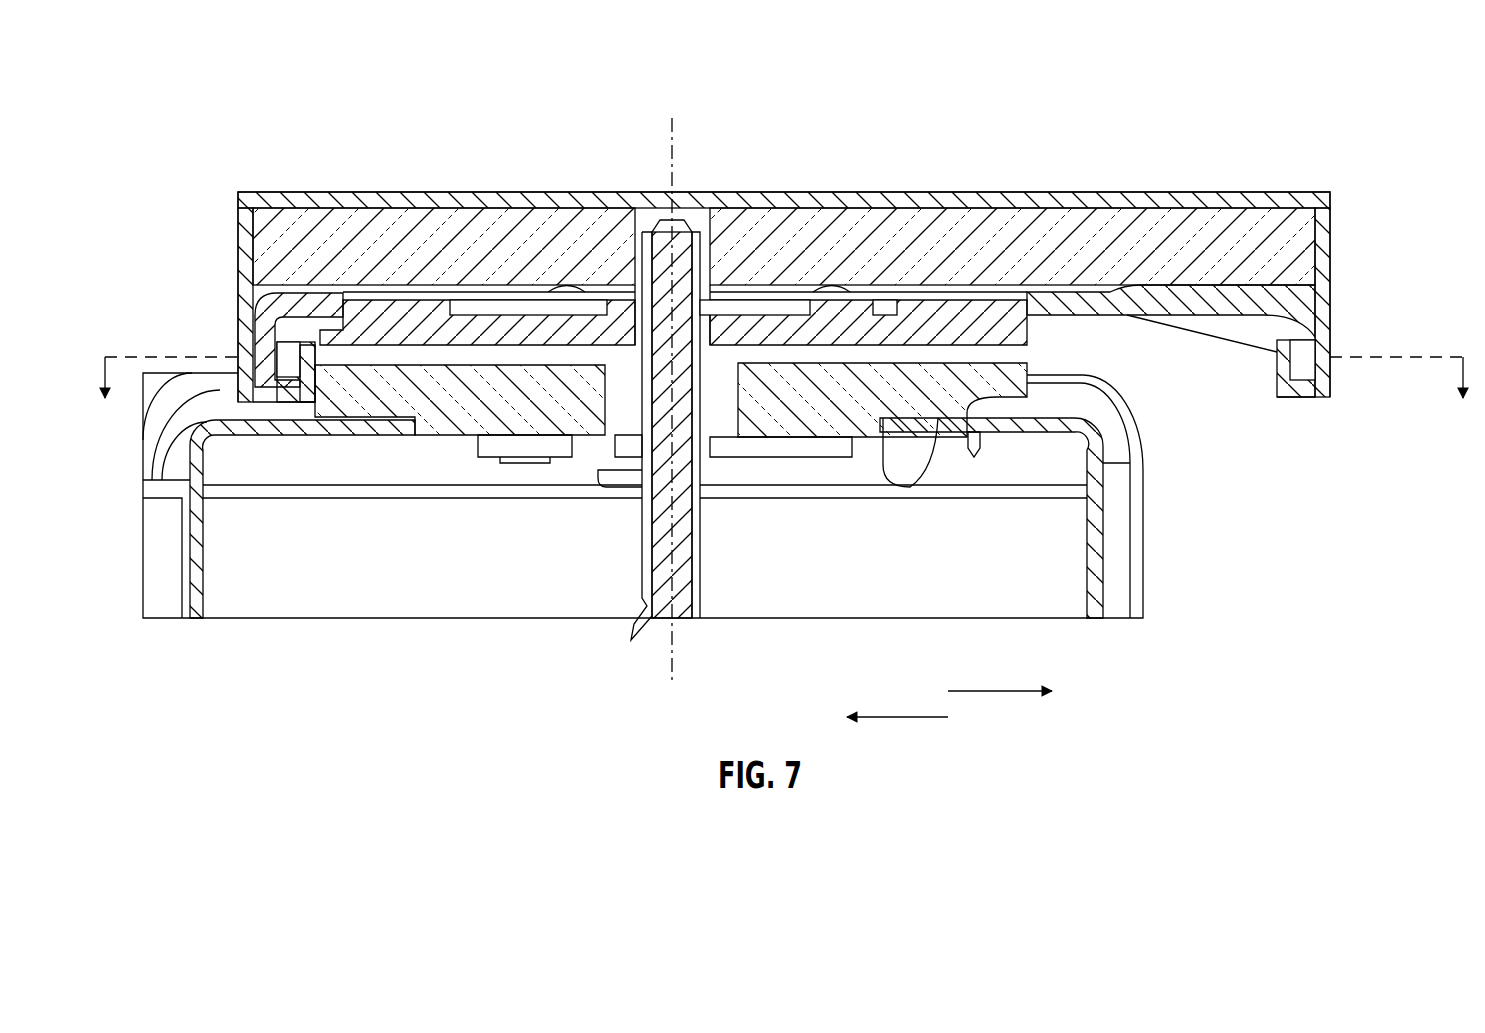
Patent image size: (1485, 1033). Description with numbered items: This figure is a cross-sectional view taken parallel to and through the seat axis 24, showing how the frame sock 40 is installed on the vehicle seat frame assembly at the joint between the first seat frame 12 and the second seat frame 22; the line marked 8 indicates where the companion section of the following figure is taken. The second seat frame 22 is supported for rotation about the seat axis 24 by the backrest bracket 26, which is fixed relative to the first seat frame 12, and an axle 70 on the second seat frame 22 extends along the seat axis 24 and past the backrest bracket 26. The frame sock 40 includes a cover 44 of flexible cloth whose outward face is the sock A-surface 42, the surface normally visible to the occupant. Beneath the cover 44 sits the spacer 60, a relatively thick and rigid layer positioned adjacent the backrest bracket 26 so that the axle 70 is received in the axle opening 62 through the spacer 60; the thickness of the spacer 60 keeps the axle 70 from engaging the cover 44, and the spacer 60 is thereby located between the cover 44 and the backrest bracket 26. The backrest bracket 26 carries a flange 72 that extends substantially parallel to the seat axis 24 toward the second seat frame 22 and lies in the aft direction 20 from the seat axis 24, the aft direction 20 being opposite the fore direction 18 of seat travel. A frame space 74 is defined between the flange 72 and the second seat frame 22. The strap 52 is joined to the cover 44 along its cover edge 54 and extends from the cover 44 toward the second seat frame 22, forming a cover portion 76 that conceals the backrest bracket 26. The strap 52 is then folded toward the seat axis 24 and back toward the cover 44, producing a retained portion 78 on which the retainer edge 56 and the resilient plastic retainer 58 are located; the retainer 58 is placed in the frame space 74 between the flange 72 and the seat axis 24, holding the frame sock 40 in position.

The frame sock 40 is at (197, 117).
The cover edge 54 is at (238, 215).
The strap 52 is at (238, 268).
The spacer 60 is at (378, 207).
The cover 44 is at (940, 192).
The sock A-surface 42 is at (783, 192).
The axle opening 62 is at (648, 208).
The axle 70 is at (703, 520).
The flange 72 is at (267, 303).
The backrest bracket 26 is at (1138, 297).
The cover portion 76 is at (1330, 300).
The frame space 74 is at (340, 395).
The retainer edge 56 is at (312, 345).
The retainer 58 is at (285, 378).
The retained portion 78 is at (308, 385).
The first seat frame 12 is at (1177, 313).
The second seat frame 22 is at (1122, 594).
The seat axis 24 is at (668, 660).
The aft direction 20 is at (895, 717).
The fore direction 18 is at (1000, 691).
The section line 8- 8 is at (783, 398).